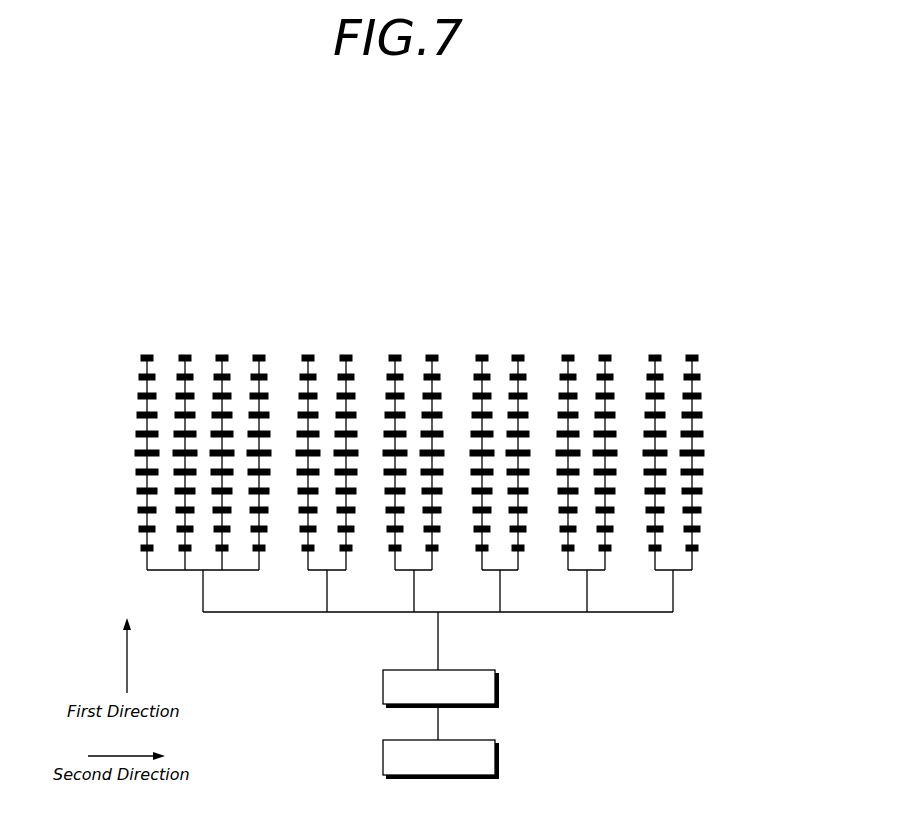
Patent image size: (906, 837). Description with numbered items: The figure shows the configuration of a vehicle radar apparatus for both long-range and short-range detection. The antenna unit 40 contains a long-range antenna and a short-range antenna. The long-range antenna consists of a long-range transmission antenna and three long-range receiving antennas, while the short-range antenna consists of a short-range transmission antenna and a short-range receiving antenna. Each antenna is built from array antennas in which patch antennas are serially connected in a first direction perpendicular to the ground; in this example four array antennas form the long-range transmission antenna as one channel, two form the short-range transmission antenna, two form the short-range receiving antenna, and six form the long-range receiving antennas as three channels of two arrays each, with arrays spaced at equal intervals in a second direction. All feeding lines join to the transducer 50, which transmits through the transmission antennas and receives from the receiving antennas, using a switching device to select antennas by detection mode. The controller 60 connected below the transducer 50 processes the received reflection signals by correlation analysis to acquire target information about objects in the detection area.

The antenna unit 40 is at (731, 440).
The transducer 50 is at (497, 688).
The controller 60 is at (497, 758).